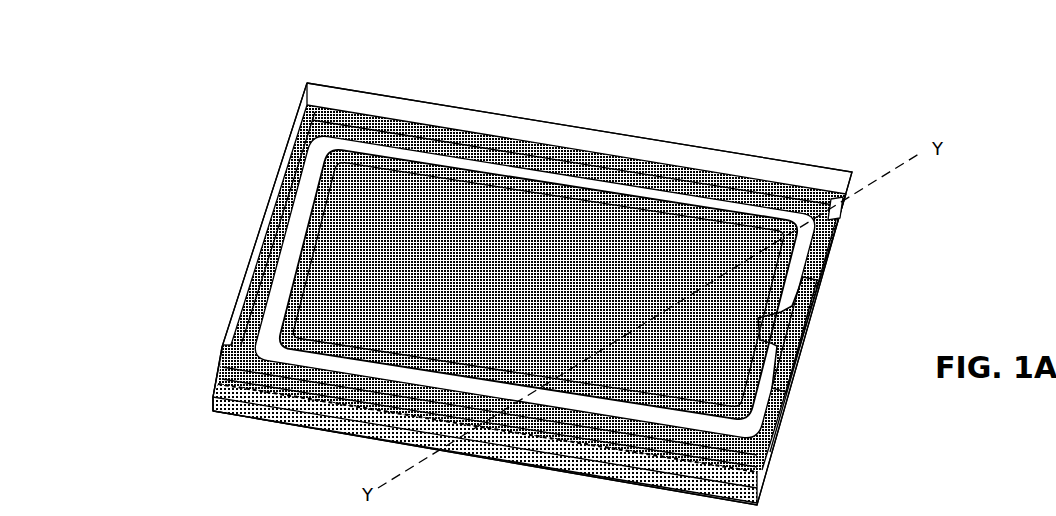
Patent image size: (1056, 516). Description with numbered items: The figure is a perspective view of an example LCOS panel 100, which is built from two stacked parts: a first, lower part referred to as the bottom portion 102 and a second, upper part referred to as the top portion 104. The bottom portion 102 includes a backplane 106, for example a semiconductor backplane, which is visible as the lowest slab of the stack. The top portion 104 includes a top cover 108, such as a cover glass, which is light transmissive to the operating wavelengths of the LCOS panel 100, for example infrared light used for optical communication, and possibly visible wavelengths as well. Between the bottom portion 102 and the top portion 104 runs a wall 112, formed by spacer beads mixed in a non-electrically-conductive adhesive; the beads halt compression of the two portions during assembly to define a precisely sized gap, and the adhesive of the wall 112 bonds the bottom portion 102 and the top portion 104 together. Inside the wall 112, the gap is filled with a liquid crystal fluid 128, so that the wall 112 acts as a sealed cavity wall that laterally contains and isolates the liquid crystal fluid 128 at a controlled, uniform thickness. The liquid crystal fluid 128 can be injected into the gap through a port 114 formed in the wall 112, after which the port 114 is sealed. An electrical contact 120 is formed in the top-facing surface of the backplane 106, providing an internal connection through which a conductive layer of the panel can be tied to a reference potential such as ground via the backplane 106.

The LCOS panel 100 is at (176, 84).
The bottom portion 102 is at (452, 443).
The top portion 104 is at (498, 288).
The backplane 106 is at (277, 418).
The top cover 108 is at (367, 105).
The wall 112 is at (484, 162).
The port 114 is at (793, 332).
The electrical contact 120 is at (842, 198).
The liquid crystal fluid 128 is at (538, 284).